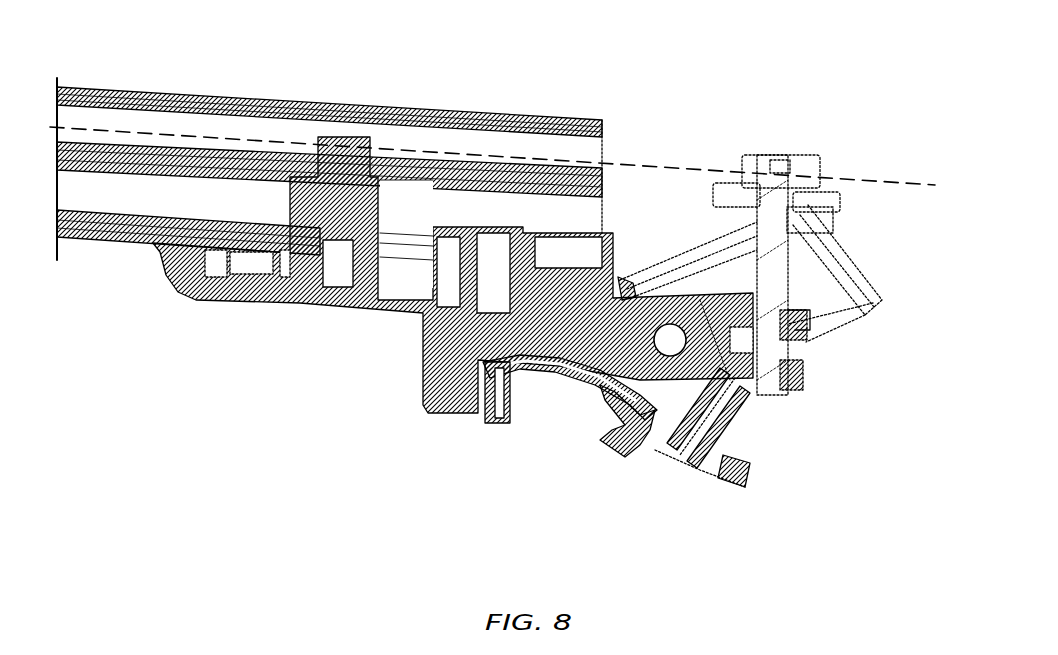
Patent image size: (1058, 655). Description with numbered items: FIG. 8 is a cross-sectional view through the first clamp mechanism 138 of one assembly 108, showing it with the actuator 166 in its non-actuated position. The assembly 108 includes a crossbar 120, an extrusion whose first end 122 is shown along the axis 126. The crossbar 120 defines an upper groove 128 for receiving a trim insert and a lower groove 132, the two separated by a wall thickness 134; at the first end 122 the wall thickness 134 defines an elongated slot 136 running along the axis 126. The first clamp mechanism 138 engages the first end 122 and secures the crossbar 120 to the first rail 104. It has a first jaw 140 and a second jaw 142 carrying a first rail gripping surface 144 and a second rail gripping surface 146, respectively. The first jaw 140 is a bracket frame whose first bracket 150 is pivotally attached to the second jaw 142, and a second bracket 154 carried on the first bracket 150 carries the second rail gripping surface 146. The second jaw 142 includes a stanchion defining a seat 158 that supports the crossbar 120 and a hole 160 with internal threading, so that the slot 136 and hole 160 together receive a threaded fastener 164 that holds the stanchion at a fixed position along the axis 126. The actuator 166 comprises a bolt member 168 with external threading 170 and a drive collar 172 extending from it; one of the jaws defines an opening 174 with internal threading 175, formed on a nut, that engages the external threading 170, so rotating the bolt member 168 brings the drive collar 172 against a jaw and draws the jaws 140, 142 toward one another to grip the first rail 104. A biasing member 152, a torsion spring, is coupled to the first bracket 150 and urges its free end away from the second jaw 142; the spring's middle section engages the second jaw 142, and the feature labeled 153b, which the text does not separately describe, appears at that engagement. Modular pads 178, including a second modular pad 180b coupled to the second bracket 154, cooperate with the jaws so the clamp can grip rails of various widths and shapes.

The first rail 104 is at (493, 413).
The assembly 108 is at (100, 69).
The crossbar 120 is at (98, 250).
The first end 122 is at (570, 120).
The axis 126 is at (922, 180).
The upper groove 128 is at (450, 255).
The lower groove 132 is at (447, 262).
The wall thickness 134 is at (600, 178).
The elongated slot 136 is at (392, 168).
The first clamp mechanism 138 is at (391, 489).
The first jaw 140 is at (870, 312).
The second jaw 142 is at (425, 392).
The first rail gripping surface 144 is at (653, 428).
The second rail gripping surface 146 is at (483, 378).
The first bracket 150 is at (883, 304).
The biasing member 152 is at (655, 385).
The trigger guard 153b is at (650, 388).
The second bracket 154 is at (690, 458).
The seat 158 is at (167, 228).
The hole 160 is at (346, 193).
The threaded fastener 164 is at (326, 137).
The actuator 166 is at (745, 157).
The bolt member 168 is at (736, 195).
The external threading 170 is at (787, 292).
The drive collar 172 is at (838, 192).
The opening 174 is at (800, 320).
The internal threading 175 is at (790, 343).
The modular pad 178 is at (673, 448).
The second modular pad 180b is at (427, 415).